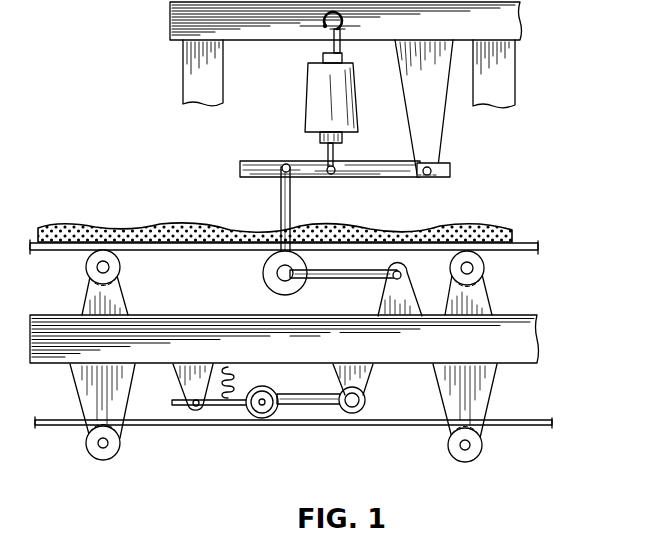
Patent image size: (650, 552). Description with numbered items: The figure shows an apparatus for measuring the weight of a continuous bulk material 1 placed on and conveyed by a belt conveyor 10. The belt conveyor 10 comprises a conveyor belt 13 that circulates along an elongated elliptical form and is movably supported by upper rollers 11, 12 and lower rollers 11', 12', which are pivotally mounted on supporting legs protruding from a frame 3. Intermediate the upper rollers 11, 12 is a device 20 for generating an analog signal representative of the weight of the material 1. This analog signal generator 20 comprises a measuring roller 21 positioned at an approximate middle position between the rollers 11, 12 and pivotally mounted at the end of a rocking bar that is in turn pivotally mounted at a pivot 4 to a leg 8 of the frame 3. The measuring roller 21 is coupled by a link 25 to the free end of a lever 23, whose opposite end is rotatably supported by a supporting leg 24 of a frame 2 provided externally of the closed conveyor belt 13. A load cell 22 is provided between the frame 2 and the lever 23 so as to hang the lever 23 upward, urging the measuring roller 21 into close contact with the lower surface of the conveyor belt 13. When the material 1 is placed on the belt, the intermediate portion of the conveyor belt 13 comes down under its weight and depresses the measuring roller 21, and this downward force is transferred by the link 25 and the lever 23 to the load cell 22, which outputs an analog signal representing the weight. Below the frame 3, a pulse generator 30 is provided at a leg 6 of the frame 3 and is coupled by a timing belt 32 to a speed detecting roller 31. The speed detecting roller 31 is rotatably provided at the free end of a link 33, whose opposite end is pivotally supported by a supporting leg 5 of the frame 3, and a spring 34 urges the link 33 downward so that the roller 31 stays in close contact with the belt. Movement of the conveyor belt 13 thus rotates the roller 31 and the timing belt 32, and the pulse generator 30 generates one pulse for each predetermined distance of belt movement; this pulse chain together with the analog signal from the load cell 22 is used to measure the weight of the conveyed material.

The continuous bulk material 1 is at (56, 224).
The frame 2 is at (520, 32).
The frame 3 is at (538, 343).
The pivot pin 4 is at (404, 270).
The supporting leg 5 is at (185, 378).
The leg 6 is at (338, 375).
The leg 8 is at (414, 295).
The belt conveyor 10 is at (108, 201).
The upper roller 11 is at (132, 268).
The lower roller 11' is at (129, 450).
The upper roller 12 is at (487, 269).
The lower roller 12' is at (488, 450).
The conveyor belt 13 is at (532, 247).
The analog signal generator 20 is at (226, 143).
The measuring roller 21 is at (266, 283).
The load cell 22 is at (313, 98).
The lever 23 is at (380, 173).
The supporting leg 24 is at (442, 131).
The link 25 is at (291, 201).
The pulse generator 30 is at (366, 402).
The speed detecting roller 31 is at (255, 420).
The timing belt 32 is at (305, 406).
The link 33 is at (215, 408).
The spring 34 is at (240, 408).